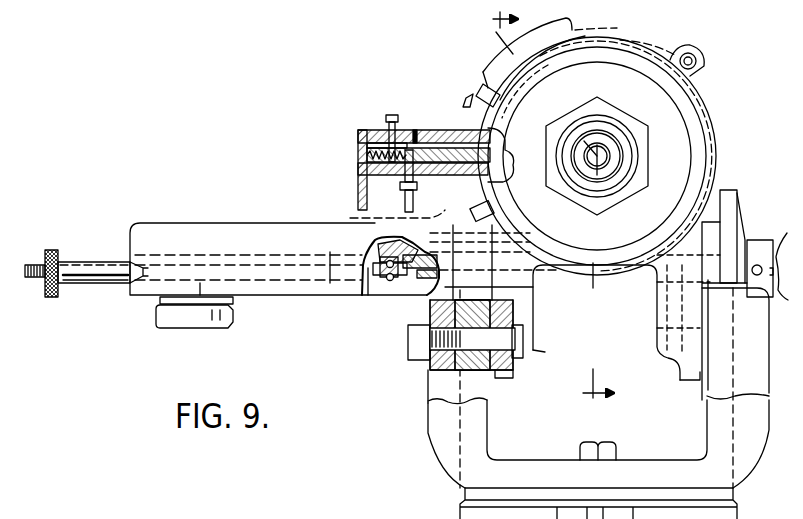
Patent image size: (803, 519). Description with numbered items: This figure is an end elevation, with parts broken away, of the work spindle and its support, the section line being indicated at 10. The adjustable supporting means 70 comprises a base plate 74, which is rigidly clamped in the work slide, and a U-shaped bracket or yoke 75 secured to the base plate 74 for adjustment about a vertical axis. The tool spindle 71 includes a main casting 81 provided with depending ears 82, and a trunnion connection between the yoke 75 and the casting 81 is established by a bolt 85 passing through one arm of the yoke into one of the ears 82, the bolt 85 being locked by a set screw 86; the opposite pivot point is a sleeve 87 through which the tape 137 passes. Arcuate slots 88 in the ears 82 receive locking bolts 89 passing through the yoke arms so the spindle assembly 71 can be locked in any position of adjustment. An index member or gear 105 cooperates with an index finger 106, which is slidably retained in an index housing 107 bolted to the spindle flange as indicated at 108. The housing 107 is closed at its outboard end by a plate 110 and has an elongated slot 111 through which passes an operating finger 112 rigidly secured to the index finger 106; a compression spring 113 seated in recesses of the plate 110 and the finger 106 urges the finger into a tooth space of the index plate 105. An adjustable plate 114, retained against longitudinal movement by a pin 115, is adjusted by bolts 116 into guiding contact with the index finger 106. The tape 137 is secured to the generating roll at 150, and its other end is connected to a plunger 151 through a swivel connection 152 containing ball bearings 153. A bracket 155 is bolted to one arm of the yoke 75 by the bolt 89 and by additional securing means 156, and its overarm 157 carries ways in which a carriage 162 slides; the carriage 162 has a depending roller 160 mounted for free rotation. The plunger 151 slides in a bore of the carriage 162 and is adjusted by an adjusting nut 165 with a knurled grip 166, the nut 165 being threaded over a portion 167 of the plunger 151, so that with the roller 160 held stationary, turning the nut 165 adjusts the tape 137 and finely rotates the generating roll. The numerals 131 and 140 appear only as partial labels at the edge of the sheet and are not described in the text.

The section line 10 is at (540, 213).
The adjustable supporting means 70 is at (425, 431).
The tool spindle 71 is at (718, 146).
The base plate 74 is at (455, 508).
The U-shaped bracket 75 is at (428, 385).
The main casting 81 is at (698, 118).
The depending ears 82 is at (513, 378).
The bolt 85 is at (786, 256).
The set screw 86 is at (755, 241).
The sleeve 87 is at (408, 321).
The arcuate slots 88 is at (657, 302).
The locking bolts 89 is at (524, 338).
The index member 105 is at (476, 208).
The index finger 106 is at (440, 158).
The index housing 107 is at (408, 130).
The bolts 108 is at (480, 88).
The plate 110 is at (357, 197).
The elongated slot 111 is at (404, 178).
The operating finger 112 is at (413, 194).
The compression spring 113 is at (365, 153).
The adjustable plate 114 is at (385, 125).
The pin 115 is at (415, 128).
The bolts 116 is at (390, 113).
The lower element 131 is at (285, 511).
The tape 137 is at (548, 272).
The lower element 140 is at (348, 511).
The tape securing point 150 is at (593, 59).
The plunger 151 is at (375, 280).
The swivel connection 152 is at (385, 282).
The ball bearings 153 is at (400, 280).
The bracket 155 is at (430, 367).
The additional securing means 156 is at (358, 218).
The overarm 157 is at (238, 224).
The roller 160 is at (168, 318).
The carriage 162 is at (312, 298).
The adjusting nut 165 is at (102, 284).
The knurled grip 166 is at (58, 250).
The threaded portion 167 is at (36, 280).